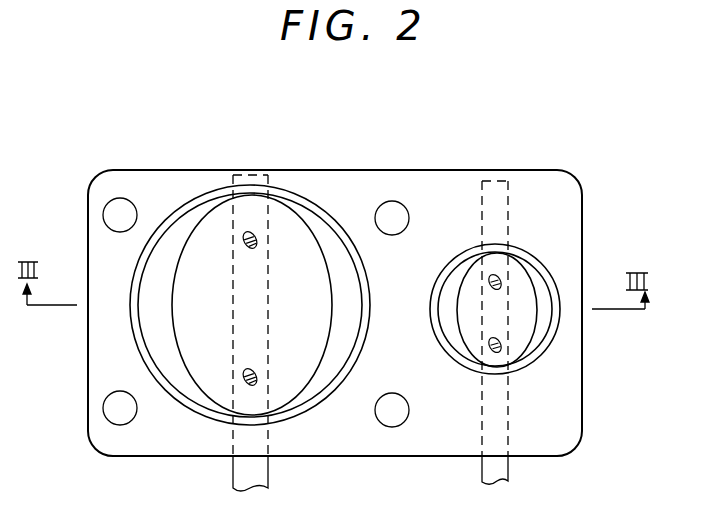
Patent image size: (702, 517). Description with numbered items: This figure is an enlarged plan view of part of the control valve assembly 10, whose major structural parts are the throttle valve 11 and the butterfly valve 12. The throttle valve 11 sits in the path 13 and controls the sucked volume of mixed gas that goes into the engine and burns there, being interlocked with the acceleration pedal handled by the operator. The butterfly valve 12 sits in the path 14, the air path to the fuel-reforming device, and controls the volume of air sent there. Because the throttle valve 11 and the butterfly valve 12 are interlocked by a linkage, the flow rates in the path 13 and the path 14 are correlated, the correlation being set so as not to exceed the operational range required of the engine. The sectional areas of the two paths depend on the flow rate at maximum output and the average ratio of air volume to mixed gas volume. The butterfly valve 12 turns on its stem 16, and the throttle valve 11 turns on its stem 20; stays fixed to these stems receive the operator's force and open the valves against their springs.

The control valve assembly 10 is at (490, 168).
The throttle valve 11 is at (284, 218).
The butterfly valve 12 is at (518, 293).
The path provided with the throttle valve 13 is at (148, 330).
The path provided with the butterfly valve 14 is at (540, 333).
The stem of the butterfly valve 16 is at (492, 467).
The stem of the throttle valve 20 is at (262, 474).